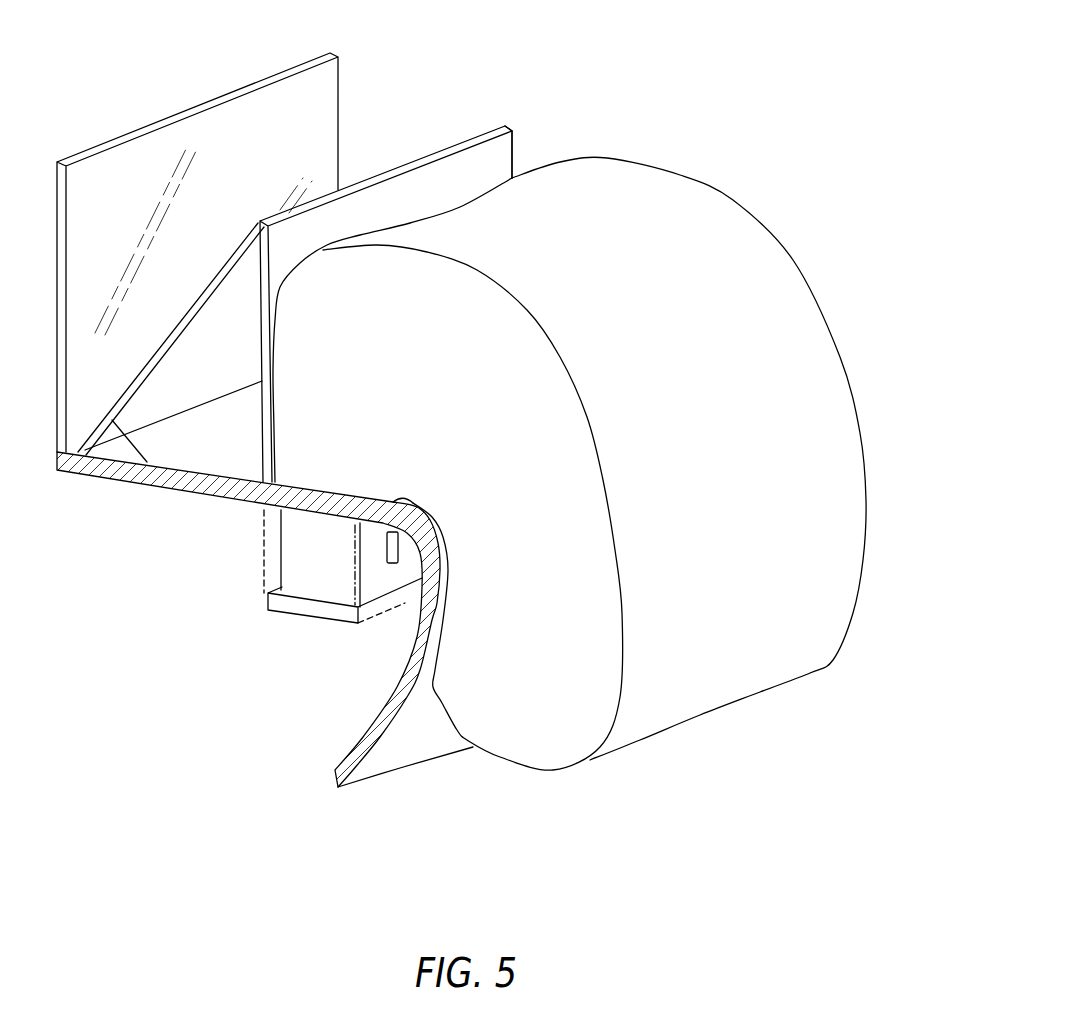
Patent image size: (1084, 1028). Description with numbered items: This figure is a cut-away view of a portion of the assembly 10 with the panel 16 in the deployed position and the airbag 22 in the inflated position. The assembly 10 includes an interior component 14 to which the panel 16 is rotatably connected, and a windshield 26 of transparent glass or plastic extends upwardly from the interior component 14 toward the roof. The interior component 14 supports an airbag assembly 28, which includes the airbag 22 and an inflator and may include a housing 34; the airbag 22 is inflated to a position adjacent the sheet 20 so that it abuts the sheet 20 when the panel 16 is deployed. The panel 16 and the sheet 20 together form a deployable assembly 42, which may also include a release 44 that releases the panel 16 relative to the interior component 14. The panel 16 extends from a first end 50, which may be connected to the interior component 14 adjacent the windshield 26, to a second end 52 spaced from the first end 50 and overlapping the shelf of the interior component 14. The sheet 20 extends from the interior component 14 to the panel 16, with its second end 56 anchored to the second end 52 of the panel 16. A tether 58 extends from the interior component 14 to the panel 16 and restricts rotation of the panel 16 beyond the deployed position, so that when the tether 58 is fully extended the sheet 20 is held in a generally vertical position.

The assembly 10 is at (716, 67).
The interior component 14 is at (357, 765).
The panel 16 is at (203, 293).
The sheet 20 is at (468, 168).
The airbag 22 is at (767, 282).
The windshield 26 is at (312, 116).
The airbag assembly 28 is at (239, 585).
The housing 34 is at (287, 615).
The deployable assembly 42 is at (507, 110).
The release 44 is at (392, 565).
The first end 50 is at (222, 398).
The second end 52 is at (433, 152).
The second end 56 is at (511, 127).
The tether 58 is at (147, 456).